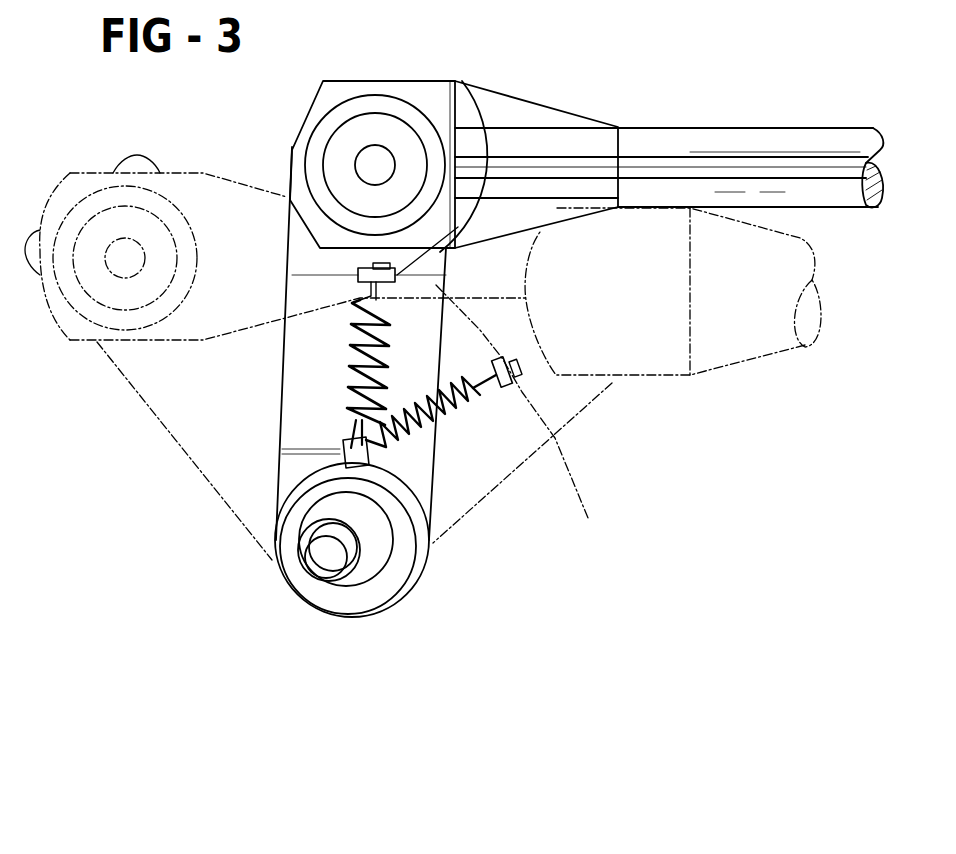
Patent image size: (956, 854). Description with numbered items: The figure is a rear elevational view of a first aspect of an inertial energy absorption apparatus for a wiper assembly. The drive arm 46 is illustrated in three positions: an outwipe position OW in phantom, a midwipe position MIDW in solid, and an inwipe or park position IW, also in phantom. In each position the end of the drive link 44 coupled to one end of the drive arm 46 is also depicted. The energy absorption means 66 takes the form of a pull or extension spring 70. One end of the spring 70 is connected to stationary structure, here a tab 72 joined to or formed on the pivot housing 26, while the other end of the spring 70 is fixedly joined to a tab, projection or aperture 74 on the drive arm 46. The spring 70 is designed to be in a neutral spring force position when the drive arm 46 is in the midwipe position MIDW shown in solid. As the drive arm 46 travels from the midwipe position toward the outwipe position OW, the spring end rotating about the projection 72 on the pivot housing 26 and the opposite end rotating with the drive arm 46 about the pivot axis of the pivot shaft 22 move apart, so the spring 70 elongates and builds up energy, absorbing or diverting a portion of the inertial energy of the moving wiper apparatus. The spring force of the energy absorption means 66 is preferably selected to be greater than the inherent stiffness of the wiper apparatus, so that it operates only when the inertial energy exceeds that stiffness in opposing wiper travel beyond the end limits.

The pivot shaft 22 is at (316, 564).
The pivot housing 26 is at (415, 535).
The drive link 44 is at (680, 145).
The drive arm 46 is at (437, 470).
The energy absorption means 66 is at (347, 356).
The extension spring 70 is at (410, 315).
The tab 72 is at (332, 445).
The tab or projection or aperture 74 is at (465, 82).
The inner wheel IW is at (118, 363).
The outer wheel OW is at (612, 385).
The middle wheel MIDW is at (365, 80).